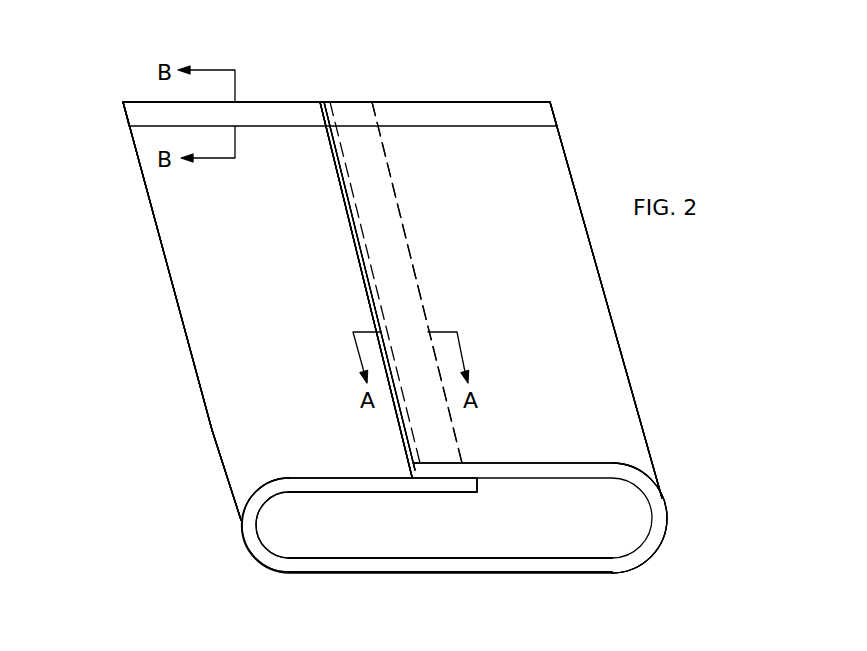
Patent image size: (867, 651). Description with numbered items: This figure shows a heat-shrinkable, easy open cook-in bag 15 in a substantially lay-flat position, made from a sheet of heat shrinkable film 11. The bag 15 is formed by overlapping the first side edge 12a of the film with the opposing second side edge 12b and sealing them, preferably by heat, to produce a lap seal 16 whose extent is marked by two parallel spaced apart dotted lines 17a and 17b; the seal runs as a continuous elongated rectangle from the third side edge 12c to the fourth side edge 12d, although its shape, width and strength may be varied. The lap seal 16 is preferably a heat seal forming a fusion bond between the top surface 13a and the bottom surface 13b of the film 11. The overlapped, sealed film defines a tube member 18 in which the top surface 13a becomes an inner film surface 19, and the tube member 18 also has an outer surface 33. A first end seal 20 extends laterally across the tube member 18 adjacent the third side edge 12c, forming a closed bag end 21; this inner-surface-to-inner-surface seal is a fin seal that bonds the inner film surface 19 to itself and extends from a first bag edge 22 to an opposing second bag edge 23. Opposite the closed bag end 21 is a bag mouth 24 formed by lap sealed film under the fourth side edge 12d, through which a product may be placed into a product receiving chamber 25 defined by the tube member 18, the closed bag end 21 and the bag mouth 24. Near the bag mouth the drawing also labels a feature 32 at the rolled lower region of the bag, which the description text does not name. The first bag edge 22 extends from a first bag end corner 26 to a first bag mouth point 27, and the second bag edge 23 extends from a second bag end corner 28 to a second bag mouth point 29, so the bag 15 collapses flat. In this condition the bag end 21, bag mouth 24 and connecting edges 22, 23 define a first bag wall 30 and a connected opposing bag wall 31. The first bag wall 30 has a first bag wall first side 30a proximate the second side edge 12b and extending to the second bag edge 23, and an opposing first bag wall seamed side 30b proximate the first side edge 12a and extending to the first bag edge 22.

The heat shrinkable film 11 is at (305, 545).
The first side edge 12a is at (478, 480).
The second side edge 12b is at (338, 180).
The third side edge 12c is at (350, 102).
The fourth side edge 12d is at (432, 492).
The top surface 13a is at (623, 537).
The bottom surface 13b is at (258, 254).
The bag 15 is at (672, 352).
The lap seal 16 is at (403, 310).
The dotted line 17a is at (414, 250).
The dotted line 17b is at (358, 265).
The tube member 18 is at (208, 350).
The inner film surface 19 is at (317, 532).
The first end seal 20 is at (428, 110).
The closed bag end 21 is at (259, 102).
The first bag edge 22 is at (150, 200).
The second bag edge 23 is at (565, 163).
The bag mouth 24 is at (330, 546).
The product receiving chamber 25 is at (450, 510).
The first bag end corner 26 is at (123, 102).
The first bag mouth point 27 is at (241, 523).
The second bag end corner 28 is at (552, 120).
The second bag mouth point 29 is at (665, 512).
The first bag wall 30 is at (195, 278).
The first bag wall first side 30a is at (435, 178).
The first bag wall seamed side 30b is at (323, 388).
The opposing bag wall 31 is at (535, 572).
The rolled cuff 32 is at (450, 477).
The outer surface 33 is at (230, 420).